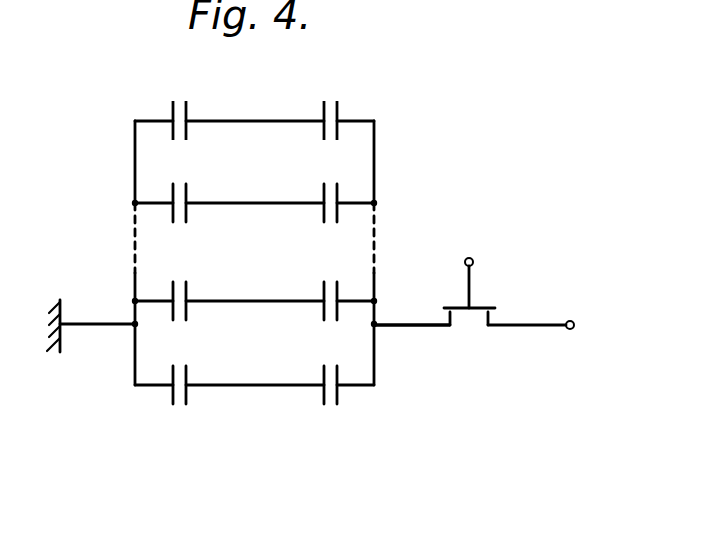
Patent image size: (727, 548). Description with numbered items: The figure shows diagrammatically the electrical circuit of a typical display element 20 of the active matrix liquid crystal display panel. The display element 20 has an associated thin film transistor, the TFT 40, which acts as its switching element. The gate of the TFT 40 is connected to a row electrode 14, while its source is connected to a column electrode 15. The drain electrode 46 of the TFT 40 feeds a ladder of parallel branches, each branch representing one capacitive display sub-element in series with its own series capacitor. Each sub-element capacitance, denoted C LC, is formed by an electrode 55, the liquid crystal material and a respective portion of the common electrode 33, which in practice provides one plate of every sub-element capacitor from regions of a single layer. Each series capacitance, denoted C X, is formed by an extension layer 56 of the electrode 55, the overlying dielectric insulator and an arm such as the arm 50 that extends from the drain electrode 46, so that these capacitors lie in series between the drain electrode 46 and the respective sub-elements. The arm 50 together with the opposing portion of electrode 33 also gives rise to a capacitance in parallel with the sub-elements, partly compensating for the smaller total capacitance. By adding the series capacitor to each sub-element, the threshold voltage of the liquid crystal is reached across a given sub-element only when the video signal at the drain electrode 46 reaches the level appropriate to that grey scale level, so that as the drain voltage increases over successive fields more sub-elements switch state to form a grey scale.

The display element 20 is at (383, 119).
The electrode 33 is at (170, 116).
The electrodes 55 is at (189, 109).
The extension layers 56 is at (321, 114).
The arm 50 is at (339, 112).
The TFT 40 is at (478, 331).
The row electrode 14 is at (469, 258).
The drain electrode 46 is at (432, 328).
The column electrode 15 is at (573, 329).